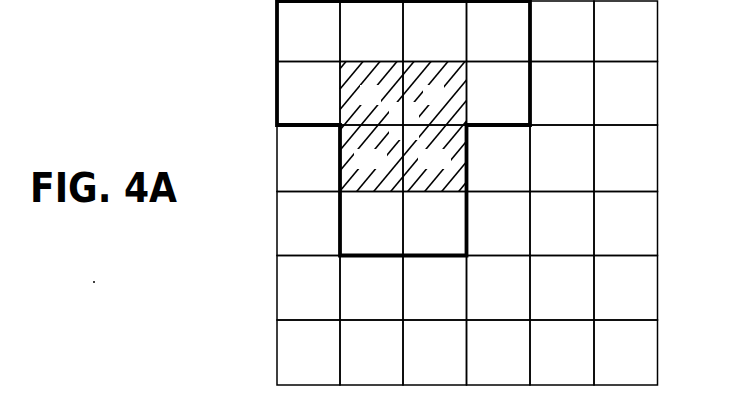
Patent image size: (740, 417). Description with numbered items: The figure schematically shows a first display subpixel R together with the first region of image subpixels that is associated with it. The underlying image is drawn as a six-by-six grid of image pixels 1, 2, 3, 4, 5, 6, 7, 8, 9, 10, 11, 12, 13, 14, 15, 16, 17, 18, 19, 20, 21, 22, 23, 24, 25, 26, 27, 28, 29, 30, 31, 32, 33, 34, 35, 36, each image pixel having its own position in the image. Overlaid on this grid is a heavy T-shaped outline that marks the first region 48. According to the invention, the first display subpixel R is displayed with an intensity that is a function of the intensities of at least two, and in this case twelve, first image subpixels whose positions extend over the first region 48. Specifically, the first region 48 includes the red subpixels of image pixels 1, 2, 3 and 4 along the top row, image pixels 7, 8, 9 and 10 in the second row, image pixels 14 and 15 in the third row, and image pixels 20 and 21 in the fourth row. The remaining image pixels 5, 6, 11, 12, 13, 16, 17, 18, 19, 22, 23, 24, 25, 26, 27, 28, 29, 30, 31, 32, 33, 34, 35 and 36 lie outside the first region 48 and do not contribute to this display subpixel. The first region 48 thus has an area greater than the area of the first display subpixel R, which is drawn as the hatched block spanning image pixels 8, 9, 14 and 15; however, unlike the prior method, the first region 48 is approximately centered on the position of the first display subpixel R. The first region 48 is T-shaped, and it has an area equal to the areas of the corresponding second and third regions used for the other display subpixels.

The first region 48 is at (277, 33).
The image pixel 1 is at (308, 31).
The image pixel 2 is at (371, 31).
The image pixel 3 is at (435, 31).
The image pixel 4 is at (499, 31).
The image pixel 5 is at (562, 31).
The image pixel 6 is at (626, 31).
The image pixel 7 is at (308, 94).
The image pixel 8 is at (371, 94).
The image pixel 9 is at (435, 94).
The image pixel 10 is at (499, 94).
The image pixel 11 is at (562, 94).
The image pixel 12 is at (626, 94).
The image pixel 13 is at (308, 158).
The image pixel 14 is at (371, 158).
The image pixel 15 is at (435, 158).
The image pixel 16 is at (499, 158).
The image pixel 17 is at (562, 158).
The image pixel 18 is at (626, 158).
The image pixel 19 is at (308, 224).
The image pixel 20 is at (371, 224).
The image pixel 21 is at (435, 224).
The image pixel 22 is at (499, 224).
The image pixel 23 is at (562, 224).
The image pixel 24 is at (626, 224).
The image pixel 25 is at (308, 288).
The image pixel 26 is at (371, 288).
The image pixel 27 is at (435, 288).
The image pixel 28 is at (499, 288).
The image pixel 29 is at (562, 288).
The image pixel 30 is at (626, 288).
The image pixel 31 is at (308, 352).
The image pixel 32 is at (371, 352).
The image pixel 33 is at (435, 352).
The image pixel 34 is at (499, 352).
The image pixel 35 is at (562, 352).
The image pixel 36 is at (626, 352).